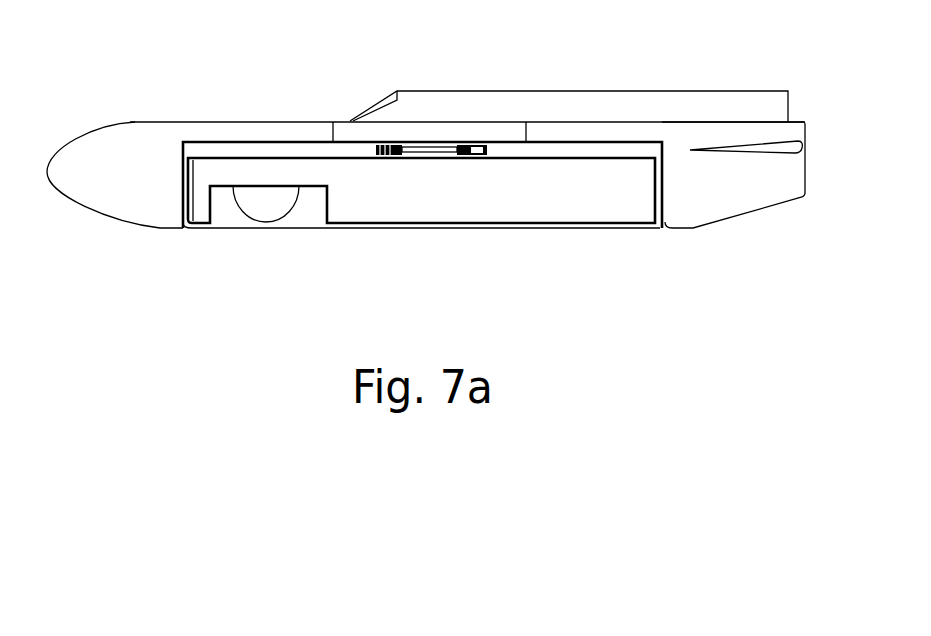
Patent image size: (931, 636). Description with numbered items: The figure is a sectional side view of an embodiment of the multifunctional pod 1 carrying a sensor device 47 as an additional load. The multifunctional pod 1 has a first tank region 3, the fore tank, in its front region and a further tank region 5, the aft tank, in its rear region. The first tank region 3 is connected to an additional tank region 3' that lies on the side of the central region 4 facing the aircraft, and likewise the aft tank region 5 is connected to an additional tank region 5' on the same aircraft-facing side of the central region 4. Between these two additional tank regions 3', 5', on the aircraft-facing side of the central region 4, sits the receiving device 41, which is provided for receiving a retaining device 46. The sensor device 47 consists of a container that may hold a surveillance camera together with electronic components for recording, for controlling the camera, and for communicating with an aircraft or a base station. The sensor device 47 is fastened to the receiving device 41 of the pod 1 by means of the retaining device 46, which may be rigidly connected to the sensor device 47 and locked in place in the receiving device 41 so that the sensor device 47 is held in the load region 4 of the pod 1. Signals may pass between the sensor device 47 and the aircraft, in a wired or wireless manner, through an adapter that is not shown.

The multifunctional pod 1 is at (150, 84).
The first tank region 3 is at (115, 206).
The additional tank region 3' is at (271, 93).
The central region 4 is at (663, 231).
The receiving device 41 is at (352, 150).
The retaining device 46 is at (440, 150).
The sensor device 47 is at (483, 197).
The tank region 5 is at (733, 201).
The additional tank region 5' is at (594, 88).